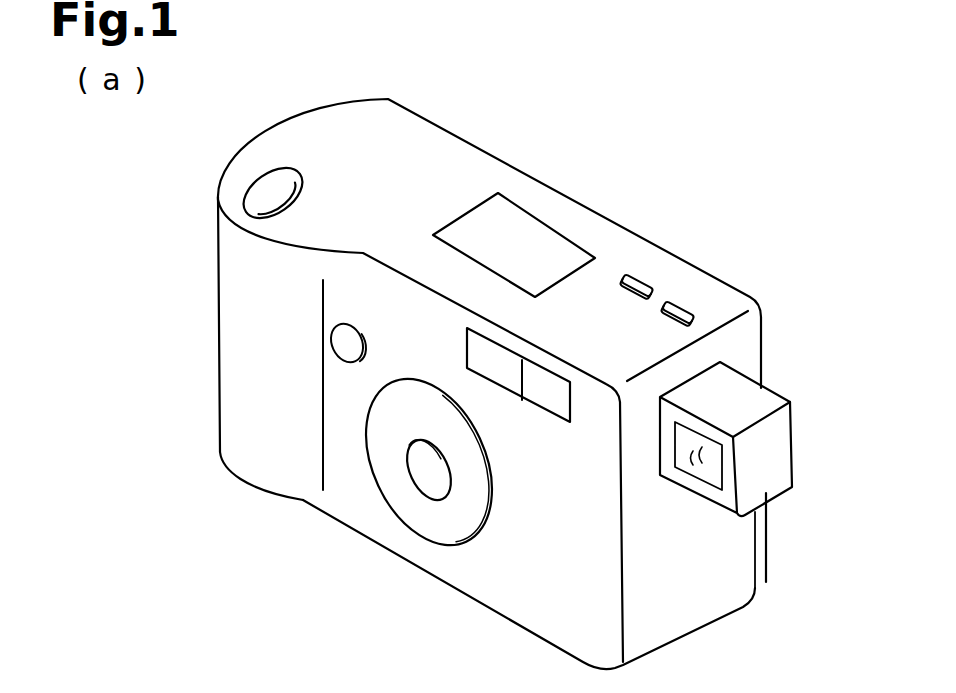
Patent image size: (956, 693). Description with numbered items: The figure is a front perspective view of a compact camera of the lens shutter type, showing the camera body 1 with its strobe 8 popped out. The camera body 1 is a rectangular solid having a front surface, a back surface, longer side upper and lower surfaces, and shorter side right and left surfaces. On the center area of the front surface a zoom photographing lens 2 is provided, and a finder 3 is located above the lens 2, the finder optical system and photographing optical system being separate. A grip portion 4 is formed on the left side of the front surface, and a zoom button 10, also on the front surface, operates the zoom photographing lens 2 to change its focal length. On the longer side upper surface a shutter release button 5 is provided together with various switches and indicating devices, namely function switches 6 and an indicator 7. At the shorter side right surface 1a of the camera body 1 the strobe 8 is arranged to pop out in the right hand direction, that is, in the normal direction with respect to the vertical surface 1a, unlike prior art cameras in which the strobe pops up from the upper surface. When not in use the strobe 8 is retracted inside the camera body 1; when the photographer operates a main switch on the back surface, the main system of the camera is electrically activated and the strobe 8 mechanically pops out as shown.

The camera body 1 is at (422, 143).
The shorter side right surface 1a is at (713, 570).
The zoom photographing lens 2 is at (428, 477).
The finder 3 is at (510, 375).
The grip portion 4 is at (252, 293).
The shutter release button 5 is at (268, 189).
The function switches 6 is at (640, 283).
The indicator 7 is at (545, 233).
The strobe 8 is at (777, 465).
The zoom button 10 is at (338, 349).